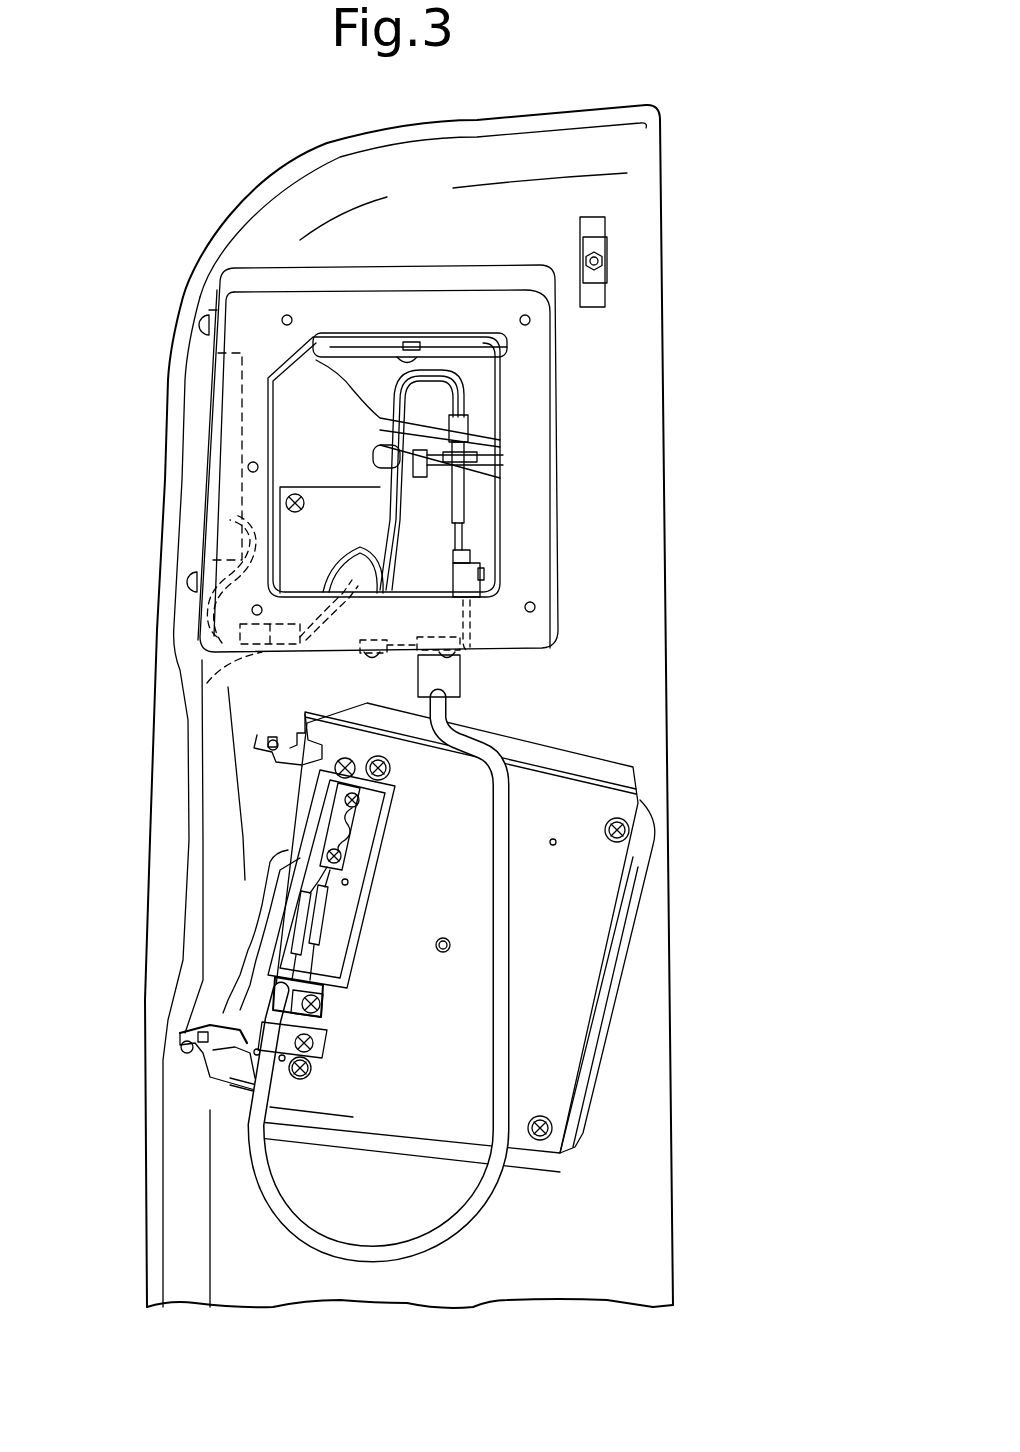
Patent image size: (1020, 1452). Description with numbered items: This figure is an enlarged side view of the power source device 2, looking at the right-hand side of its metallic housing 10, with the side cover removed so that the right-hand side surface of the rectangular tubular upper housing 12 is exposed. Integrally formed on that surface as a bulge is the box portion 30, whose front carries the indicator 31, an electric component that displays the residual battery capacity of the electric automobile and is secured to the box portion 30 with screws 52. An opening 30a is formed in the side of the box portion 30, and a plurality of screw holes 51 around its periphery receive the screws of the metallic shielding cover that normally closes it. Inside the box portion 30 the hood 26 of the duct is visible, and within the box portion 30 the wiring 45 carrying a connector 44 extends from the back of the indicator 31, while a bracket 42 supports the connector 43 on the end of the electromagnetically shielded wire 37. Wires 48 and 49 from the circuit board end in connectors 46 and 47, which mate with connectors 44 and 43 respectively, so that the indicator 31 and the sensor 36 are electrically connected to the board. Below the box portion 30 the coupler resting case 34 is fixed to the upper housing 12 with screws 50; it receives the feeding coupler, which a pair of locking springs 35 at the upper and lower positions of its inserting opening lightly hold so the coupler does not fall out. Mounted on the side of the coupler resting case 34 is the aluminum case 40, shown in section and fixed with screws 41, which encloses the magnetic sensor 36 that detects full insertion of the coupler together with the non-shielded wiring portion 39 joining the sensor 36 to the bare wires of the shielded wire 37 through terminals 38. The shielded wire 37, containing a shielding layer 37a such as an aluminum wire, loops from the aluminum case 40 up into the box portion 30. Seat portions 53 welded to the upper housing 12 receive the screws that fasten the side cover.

The power source device 2 is at (225, 219).
The housing 10 is at (318, 144).
The upper housing 12 is at (151, 745).
The hood 26 is at (353, 390).
The box portion 30 is at (474, 300).
The opening 30a is at (275, 415).
The indicator 31 is at (200, 478).
The coupler resting case 34 is at (560, 1018).
The locking springs 35 is at (257, 737).
The sensor 36 is at (360, 813).
The electromagnetically shielded wire 37 is at (478, 1221).
The shielding layer 37a is at (292, 982).
The terminals 38 is at (303, 903).
The wiring portion 39 is at (288, 853).
The aluminum case 40 is at (330, 945).
The screws 41 is at (338, 760).
The bracket 42 is at (477, 543).
The connector 43 is at (463, 503).
The connector 44 is at (226, 684).
The wiring 45 is at (240, 632).
The connector 46 is at (306, 600).
The connector 47 is at (470, 427).
The wire 48 is at (360, 548).
The wire 49 is at (385, 437).
The screws 50 is at (376, 757).
The screw holes 51 is at (292, 315).
The screws 52 is at (201, 323).
The seat portions 53 is at (612, 268).